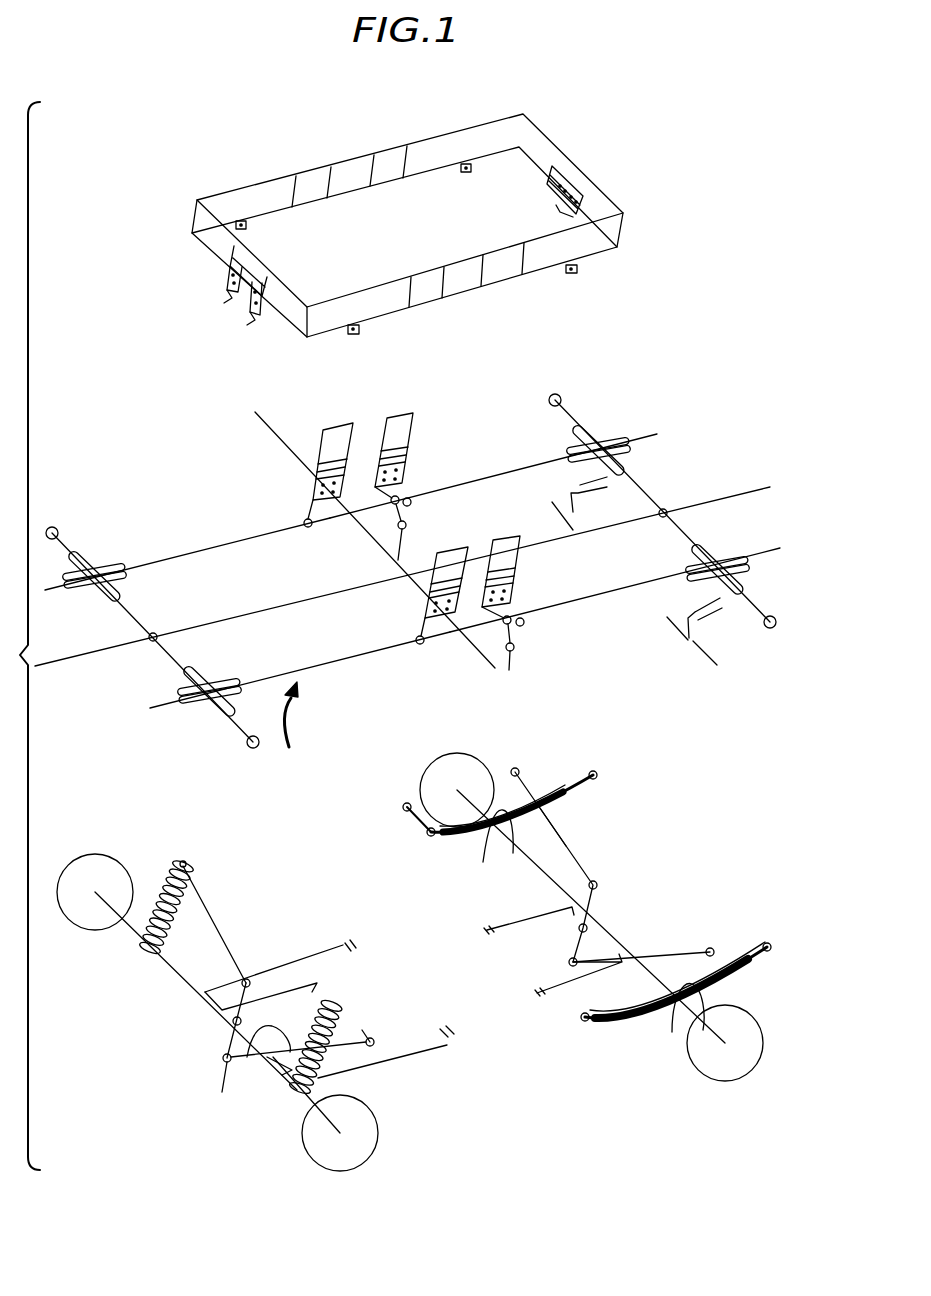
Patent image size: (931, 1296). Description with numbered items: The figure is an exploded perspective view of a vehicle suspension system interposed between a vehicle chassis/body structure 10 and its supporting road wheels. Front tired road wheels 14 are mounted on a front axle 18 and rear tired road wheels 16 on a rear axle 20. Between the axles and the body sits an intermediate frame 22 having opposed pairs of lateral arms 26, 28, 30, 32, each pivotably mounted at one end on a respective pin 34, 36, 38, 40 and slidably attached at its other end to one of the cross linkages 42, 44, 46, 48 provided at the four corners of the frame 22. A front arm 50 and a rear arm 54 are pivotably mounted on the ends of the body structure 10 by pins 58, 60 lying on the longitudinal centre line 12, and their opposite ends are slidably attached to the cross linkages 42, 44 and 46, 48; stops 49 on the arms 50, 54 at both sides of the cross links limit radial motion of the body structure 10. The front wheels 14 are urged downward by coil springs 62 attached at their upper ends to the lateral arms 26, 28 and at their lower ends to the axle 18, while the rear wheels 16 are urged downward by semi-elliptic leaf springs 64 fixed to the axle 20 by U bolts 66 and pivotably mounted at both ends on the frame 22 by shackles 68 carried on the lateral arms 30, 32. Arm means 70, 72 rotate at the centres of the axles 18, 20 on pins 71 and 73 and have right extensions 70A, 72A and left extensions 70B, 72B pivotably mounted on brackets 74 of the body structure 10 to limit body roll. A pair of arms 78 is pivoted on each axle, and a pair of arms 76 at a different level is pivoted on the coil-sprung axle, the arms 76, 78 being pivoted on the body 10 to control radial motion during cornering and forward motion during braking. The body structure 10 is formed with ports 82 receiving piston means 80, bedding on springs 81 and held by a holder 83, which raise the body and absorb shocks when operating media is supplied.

The vehicle chassis/body structure 10 is at (556, 105).
The longitudinal centre line 12 is at (97, 657).
The front tired road wheels 14 is at (88, 852).
The rear tired road wheels 16 is at (446, 768).
The front axle 18 is at (188, 990).
The rear axle 20 is at (707, 1040).
The intermediate frame 22 is at (301, 728).
The lateral arm 26 is at (185, 560).
The lateral arm 28 is at (332, 658).
The lateral arm 30 is at (458, 485).
The lateral arm 32 is at (616, 594).
The pin 34 is at (306, 530).
The pin 36 is at (419, 645).
The pin 38 is at (412, 502).
The pin 40 is at (523, 625).
The cross linkage 42 is at (88, 557).
The cross linkage 44 is at (207, 712).
The cross linkage 46 is at (607, 437).
The cross linkage 48 is at (745, 567).
The stops 49 is at (57, 527).
The front arm 50 is at (128, 613).
The rear arm 54 is at (640, 498).
The pin 58 is at (243, 318).
The pin 60 is at (590, 205).
The coil springs 62 is at (175, 855).
The semi-elliptic leaf springs 64 is at (562, 790).
The U bolts 66 is at (485, 852).
The shackles 68 is at (398, 560).
The arm means 70 is at (228, 1040).
The right pivoted extension 70A is at (226, 868).
The left pivoted extension 70B is at (240, 1063).
The pin 71 is at (217, 1023).
The arm means 72 is at (597, 900).
The right pivoted extension 72A is at (567, 833).
The left pivoted extension 72B is at (683, 950).
The pin 73 is at (587, 940).
The brackets 74 is at (465, 172).
The arms 76 is at (258, 967).
The arms 78 is at (287, 987).
The piston means 80 is at (557, 190).
The springs 81 is at (568, 217).
The ports 82 is at (310, 178).
The holder 83 is at (553, 192).